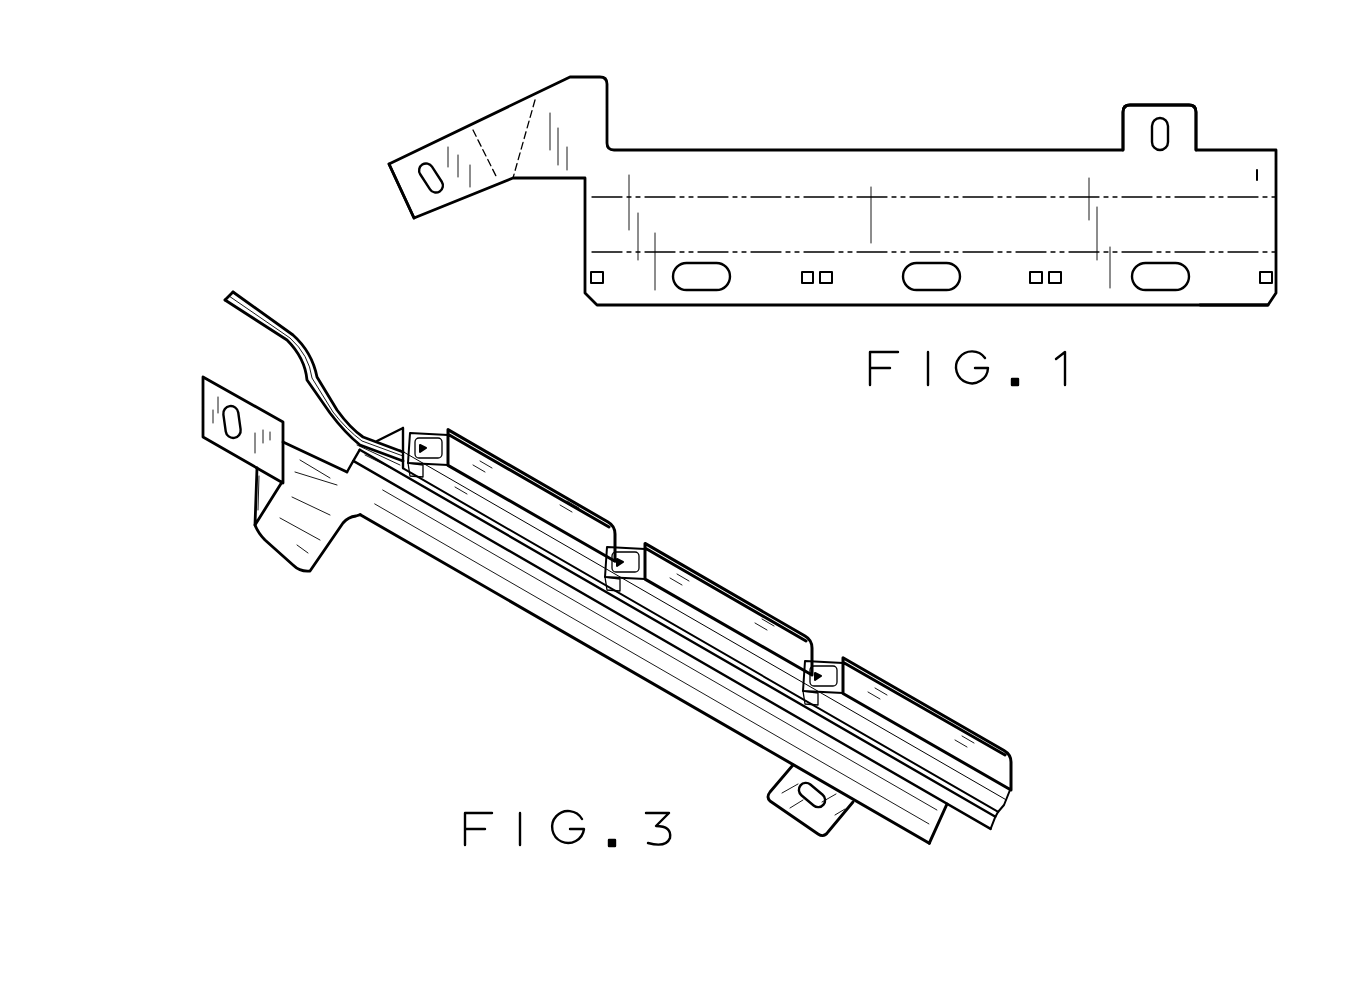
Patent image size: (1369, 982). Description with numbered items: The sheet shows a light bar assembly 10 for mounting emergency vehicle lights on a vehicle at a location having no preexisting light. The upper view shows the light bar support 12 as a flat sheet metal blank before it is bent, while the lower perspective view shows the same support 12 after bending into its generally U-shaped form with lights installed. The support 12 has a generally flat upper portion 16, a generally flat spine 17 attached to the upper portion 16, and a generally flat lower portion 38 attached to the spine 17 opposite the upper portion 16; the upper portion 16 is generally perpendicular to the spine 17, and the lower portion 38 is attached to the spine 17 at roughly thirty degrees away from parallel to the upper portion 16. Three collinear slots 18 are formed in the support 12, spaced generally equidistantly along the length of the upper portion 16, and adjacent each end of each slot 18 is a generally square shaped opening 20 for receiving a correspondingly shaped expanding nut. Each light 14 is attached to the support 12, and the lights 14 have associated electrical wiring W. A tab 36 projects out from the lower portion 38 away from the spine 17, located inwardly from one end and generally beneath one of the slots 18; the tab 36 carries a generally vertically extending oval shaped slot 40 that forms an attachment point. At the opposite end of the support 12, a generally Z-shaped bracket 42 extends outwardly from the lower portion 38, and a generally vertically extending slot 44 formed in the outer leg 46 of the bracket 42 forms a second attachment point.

In FIG. 3, the light bar assembly 10 is at (1029, 605).
In FIG. 1, the light bar support 12 is at (854, 140).
In FIG. 3, the light bar support 12 is at (595, 652).
In FIG. 3, the light 14 is at (531, 461).
In FIG. 1, the upper portion 16 is at (1224, 294).
In FIG. 1, the spine 17 is at (1262, 222).
In FIG. 3, the spine 17 is at (397, 447).
In FIG. 1, the slot 18 is at (713, 291).
In FIG. 1, the square shaped opening 20 is at (590, 276).
In FIG. 1, the tab 36 is at (1196, 107).
In FIG. 3, the tab 36 is at (790, 765).
In FIG. 1, the lower portion 38 is at (1261, 175).
In FIG. 3, the lower portion 38 is at (970, 826).
In FIG. 1, the oval shaped slot 40 is at (1160, 118).
In FIG. 3, the oval shaped slot 40 is at (805, 807).
In FIG. 1, the bracket 42 is at (505, 108).
In FIG. 3, the bracket 42 is at (293, 567).
In FIG. 1, the slot 44 is at (449, 212).
In FIG. 3, the slot 44 is at (225, 420).
In FIG. 1, the outer leg 46 is at (438, 145).
In FIG. 3, the outer leg 46 is at (250, 468).
In FIG. 3, the electrical wiring W is at (285, 322).